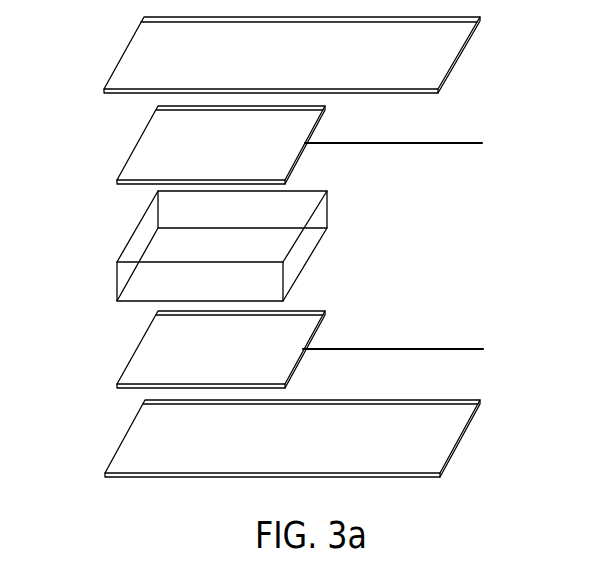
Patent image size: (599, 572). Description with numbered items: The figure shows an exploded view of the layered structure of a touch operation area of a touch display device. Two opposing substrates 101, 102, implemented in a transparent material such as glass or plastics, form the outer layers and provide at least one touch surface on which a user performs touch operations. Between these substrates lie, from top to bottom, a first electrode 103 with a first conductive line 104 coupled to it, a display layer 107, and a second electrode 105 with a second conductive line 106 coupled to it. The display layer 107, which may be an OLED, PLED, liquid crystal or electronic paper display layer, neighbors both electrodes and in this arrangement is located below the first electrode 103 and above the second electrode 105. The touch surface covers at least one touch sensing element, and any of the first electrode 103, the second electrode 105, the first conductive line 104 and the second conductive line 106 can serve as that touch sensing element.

The substrate 101 is at (129, 45).
The substrate 102 is at (127, 433).
The first electrode 103 is at (139, 140).
The first conductive line 104 is at (405, 145).
The second electrode 105 is at (142, 340).
The second conductive line 106 is at (403, 348).
The display layer 107 is at (131, 238).